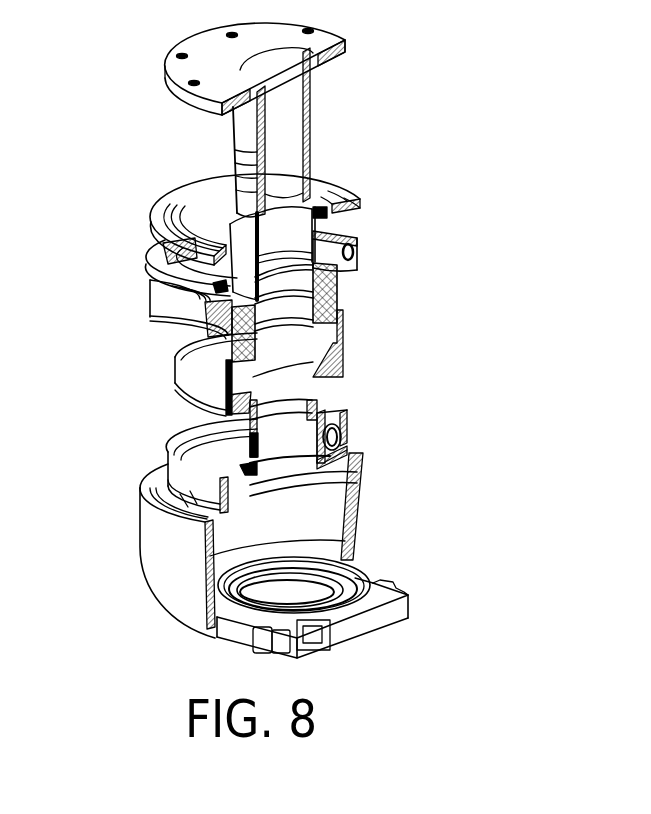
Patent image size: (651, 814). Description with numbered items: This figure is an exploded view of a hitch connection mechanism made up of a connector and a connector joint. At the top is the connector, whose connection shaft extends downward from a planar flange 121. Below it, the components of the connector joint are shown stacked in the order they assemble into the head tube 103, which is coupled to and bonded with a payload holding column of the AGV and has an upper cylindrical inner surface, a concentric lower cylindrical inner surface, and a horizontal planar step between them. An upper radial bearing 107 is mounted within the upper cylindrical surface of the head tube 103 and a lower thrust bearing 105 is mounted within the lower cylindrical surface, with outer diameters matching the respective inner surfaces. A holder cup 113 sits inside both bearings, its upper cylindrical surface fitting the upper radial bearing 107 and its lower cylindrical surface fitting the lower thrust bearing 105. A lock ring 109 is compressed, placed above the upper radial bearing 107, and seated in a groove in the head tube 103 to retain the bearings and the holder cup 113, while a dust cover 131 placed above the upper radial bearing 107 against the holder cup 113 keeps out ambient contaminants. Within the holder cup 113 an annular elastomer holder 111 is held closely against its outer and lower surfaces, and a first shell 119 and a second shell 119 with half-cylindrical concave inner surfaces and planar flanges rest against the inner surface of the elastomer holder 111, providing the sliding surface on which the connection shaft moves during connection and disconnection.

The flange 121 is at (166, 64).
The dust cover 131 is at (160, 208).
The lock ring 109 is at (330, 212).
The shell 119 is at (300, 231).
The upper radial bearing 107 is at (357, 248).
The annular elastomer holder 111 is at (347, 287).
The holder cup 113 is at (343, 351).
The lower thrust bearing 105 is at (345, 430).
The head tube 103 is at (363, 490).